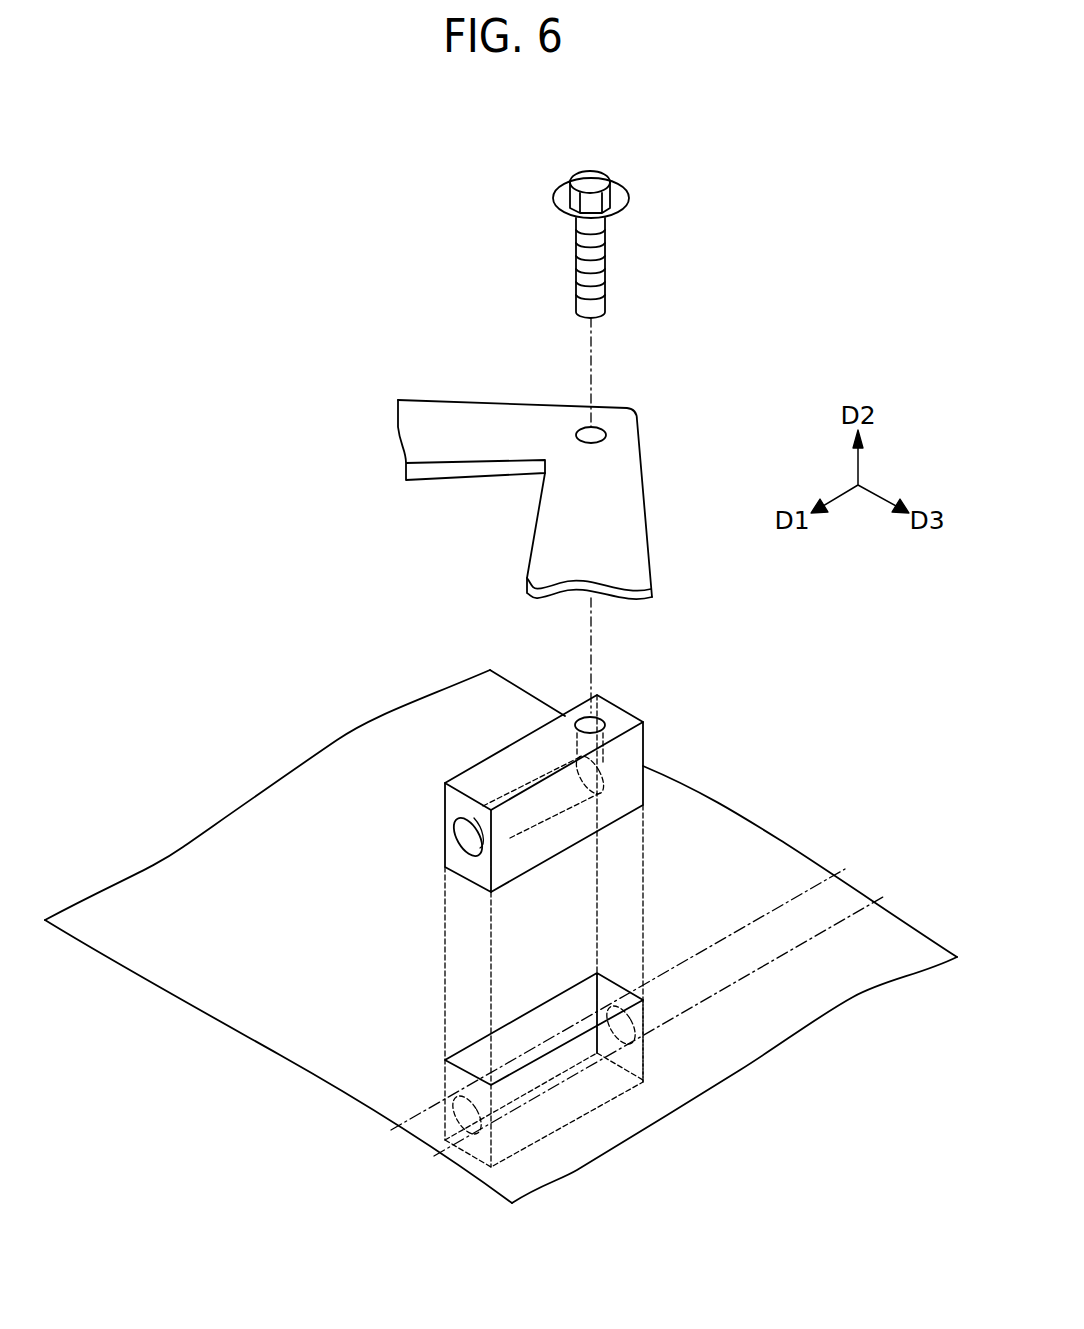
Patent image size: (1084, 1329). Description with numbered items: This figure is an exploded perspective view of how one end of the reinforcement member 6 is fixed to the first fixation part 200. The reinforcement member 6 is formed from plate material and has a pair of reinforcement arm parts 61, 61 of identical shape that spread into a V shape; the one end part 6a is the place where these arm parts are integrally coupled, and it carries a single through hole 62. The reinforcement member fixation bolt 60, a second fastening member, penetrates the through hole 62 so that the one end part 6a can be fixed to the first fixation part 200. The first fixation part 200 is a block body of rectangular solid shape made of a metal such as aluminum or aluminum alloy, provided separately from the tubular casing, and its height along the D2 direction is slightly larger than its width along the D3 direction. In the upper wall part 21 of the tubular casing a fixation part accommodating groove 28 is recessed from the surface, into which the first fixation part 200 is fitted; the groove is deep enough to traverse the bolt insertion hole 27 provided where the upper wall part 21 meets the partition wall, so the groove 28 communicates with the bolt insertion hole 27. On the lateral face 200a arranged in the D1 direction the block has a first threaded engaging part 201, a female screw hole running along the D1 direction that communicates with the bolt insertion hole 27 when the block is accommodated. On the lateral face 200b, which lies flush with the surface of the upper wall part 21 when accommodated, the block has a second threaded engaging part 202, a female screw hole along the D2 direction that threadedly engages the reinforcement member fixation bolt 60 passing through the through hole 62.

The reinforcement member 6 is at (579, 410).
The one end part 6a is at (640, 428).
The reinforcement member fixation bolt 60 is at (591, 177).
The reinforcement arm part 61 is at (438, 400).
The through hole 62 is at (595, 430).
The upper wall part 21 is at (138, 897).
The bolt insertion hole 27 is at (796, 920).
The fixation part accommodating groove 28 is at (530, 1043).
The first fixation part 200 is at (481, 894).
The lateral face 200a is at (443, 799).
The lateral face 200b is at (510, 758).
The first threaded engaging part 201 is at (445, 853).
The second threaded engaging part 202 is at (655, 715).